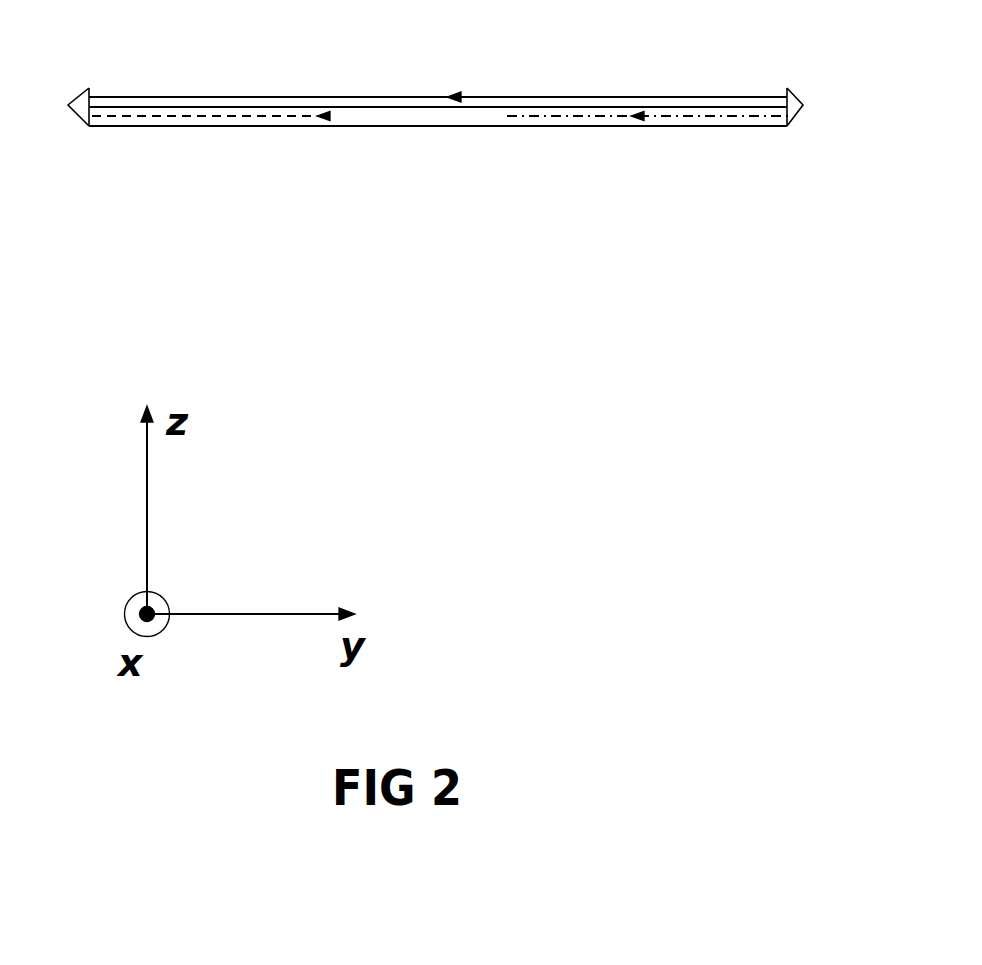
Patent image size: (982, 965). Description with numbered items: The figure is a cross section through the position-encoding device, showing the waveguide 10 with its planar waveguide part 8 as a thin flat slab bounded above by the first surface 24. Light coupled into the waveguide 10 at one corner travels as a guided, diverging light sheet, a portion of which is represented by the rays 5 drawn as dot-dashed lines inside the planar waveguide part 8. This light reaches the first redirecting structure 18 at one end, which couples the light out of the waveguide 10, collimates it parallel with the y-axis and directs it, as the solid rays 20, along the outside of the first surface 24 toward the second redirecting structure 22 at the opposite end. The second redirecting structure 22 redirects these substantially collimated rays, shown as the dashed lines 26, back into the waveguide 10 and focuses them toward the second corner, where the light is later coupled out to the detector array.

The rays 5 is at (592, 118).
The planar waveguide part 8 is at (395, 117).
The waveguide 10 is at (95, 122).
The first redirecting structure 18 is at (803, 105).
The solid rays 20 is at (540, 97).
The second redirecting structure 22 is at (78, 103).
The first surface 24 is at (195, 104).
The dashed lines 26 is at (227, 118).